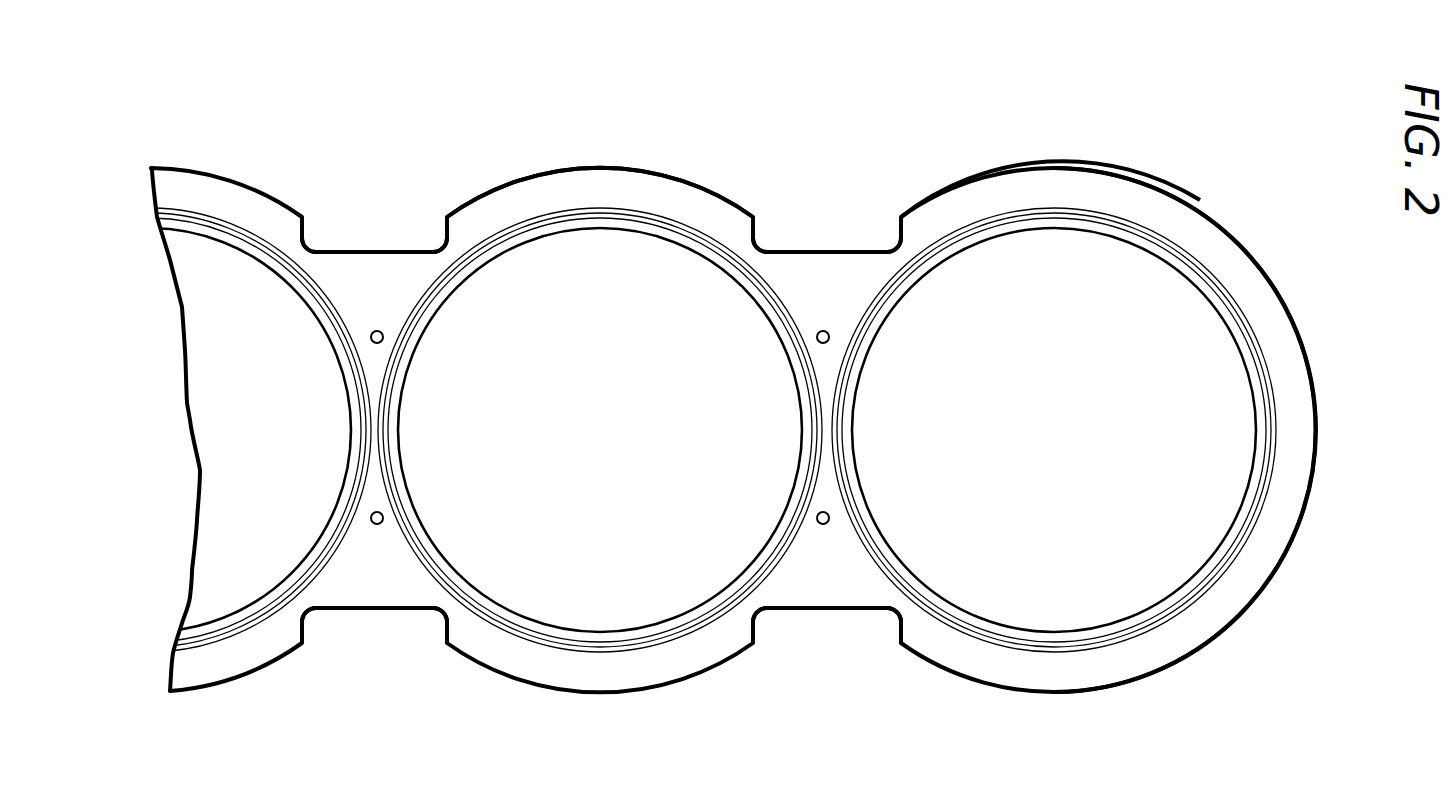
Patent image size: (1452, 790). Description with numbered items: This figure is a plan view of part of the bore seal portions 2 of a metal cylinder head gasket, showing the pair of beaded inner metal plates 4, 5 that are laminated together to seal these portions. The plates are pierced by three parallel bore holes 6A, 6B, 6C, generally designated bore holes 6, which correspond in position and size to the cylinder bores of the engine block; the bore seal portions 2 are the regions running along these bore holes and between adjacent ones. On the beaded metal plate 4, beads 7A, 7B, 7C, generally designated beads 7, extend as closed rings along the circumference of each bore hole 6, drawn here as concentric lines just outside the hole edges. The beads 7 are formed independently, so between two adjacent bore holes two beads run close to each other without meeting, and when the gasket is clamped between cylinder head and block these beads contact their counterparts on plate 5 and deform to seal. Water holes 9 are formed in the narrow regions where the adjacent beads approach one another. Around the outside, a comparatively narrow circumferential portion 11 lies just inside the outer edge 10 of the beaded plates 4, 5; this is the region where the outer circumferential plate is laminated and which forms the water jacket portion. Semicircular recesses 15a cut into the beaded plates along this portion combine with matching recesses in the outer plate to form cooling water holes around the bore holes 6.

The bore seal portion 2 is at (1226, 224).
The beaded inner metal plate 4 is at (1229, 430).
The beaded inner metal plate 5 is at (1266, 548).
The bore hole 6 is at (275, 262).
The bore hole 6A is at (1033, 422).
The bore hole 6B is at (590, 422).
The bore hole 6C is at (215, 422).
The bead 7 is at (745, 265).
The bead 7A is at (1045, 645).
The bead 7B is at (598, 640).
The bead 7C is at (250, 617).
The water hole 9 is at (383, 337).
The outer edge 10 is at (966, 180).
The circumferential portion 11 is at (626, 190).
The semicircular recess 15a is at (310, 238).